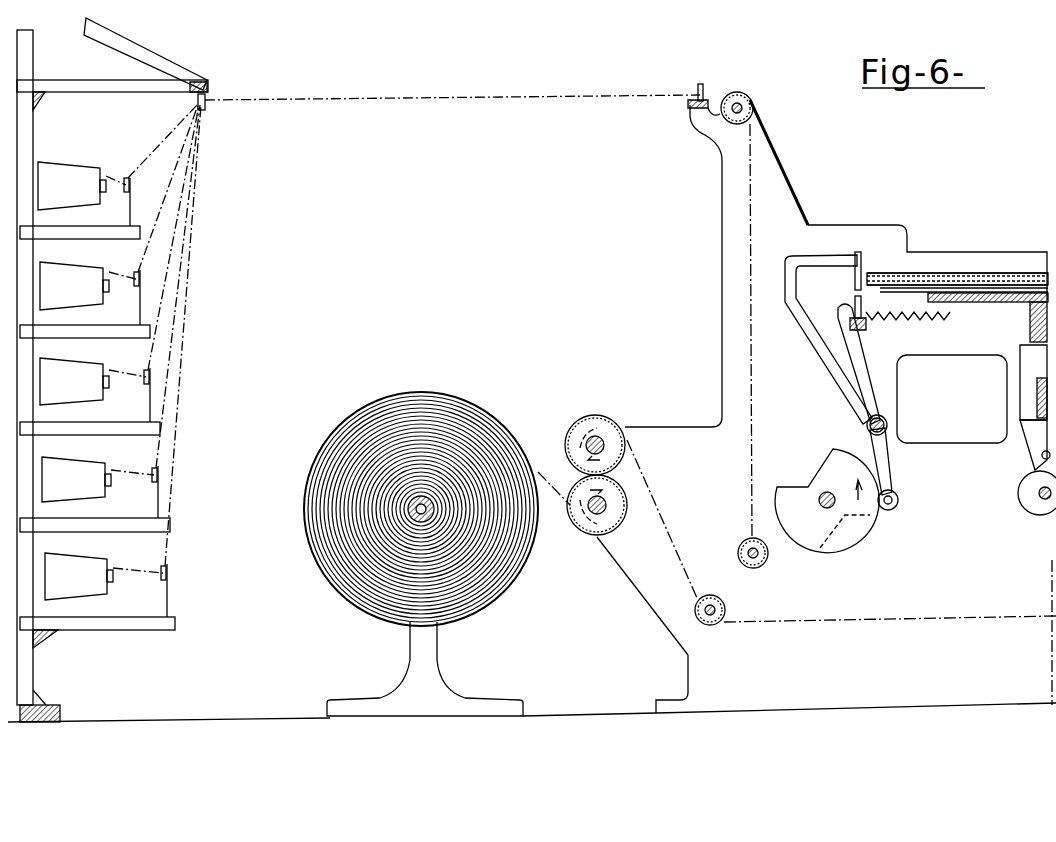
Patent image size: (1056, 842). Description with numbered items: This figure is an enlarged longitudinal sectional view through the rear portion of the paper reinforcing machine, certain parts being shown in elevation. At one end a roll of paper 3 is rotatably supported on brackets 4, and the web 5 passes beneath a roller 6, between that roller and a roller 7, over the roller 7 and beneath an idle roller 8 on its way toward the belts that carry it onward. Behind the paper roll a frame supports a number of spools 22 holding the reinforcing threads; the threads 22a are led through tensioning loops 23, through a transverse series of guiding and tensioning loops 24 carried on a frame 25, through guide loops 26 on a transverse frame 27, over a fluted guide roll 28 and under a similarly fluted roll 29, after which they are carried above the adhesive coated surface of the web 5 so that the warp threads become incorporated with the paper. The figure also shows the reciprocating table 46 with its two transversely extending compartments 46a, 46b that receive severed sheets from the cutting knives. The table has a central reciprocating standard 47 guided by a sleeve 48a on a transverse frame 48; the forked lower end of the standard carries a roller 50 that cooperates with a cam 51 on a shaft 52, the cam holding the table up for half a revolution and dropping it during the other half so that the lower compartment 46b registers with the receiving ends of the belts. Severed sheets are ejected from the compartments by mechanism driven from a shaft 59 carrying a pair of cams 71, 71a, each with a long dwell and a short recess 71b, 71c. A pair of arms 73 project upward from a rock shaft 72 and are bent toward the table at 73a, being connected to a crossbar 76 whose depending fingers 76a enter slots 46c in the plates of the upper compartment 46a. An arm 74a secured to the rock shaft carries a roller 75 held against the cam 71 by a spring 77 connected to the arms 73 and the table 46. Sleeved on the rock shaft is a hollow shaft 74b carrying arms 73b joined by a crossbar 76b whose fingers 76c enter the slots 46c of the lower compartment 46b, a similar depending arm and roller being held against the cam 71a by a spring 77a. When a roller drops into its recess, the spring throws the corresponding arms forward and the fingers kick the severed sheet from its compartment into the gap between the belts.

The roll of paper 3 is at (503, 594).
The brackets 4 is at (440, 648).
The web 5 is at (556, 480).
The roller 6 is at (590, 540).
The roller 7 is at (594, 414).
The idle roller 8 is at (712, 595).
The spools 22 is at (104, 170).
The threads 22a is at (122, 178).
The tensioning loops 23 is at (131, 188).
The guiding and tensioning loops 24 is at (205, 110).
The frame 25 is at (207, 90).
The guide loops 26 is at (697, 86).
The transverse frame 27 is at (686, 105).
The fluted guide roll 28 is at (750, 103).
The fluted roll 29 is at (755, 538).
The reciprocating table 46 is at (1000, 310).
The compartment 46a is at (958, 270).
The compartment 46b is at (1032, 273).
The slots 46c is at (905, 290).
The reciprocating standard 47 is at (1030, 328).
The transverse frame 48 is at (1037, 386).
The sleeve 48a is at (1020, 428).
The roller 50 is at (1040, 462).
The cam 51 is at (1018, 496).
The shaft 52 is at (1043, 497).
The shaft 59 is at (823, 506).
The cam 71 is at (811, 540).
The cam 71a is at (812, 452).
The recess 71b is at (790, 480).
The recess 71c is at (858, 520).
The rock shaft 72 is at (868, 428).
The arms 73 is at (804, 336).
The bent portion 73a is at (795, 257).
The arms 73b is at (858, 385).
The arm 74a is at (886, 463).
The hollow shaft 74b is at (888, 422).
The roller 75 is at (898, 503).
The crossbar 76 is at (859, 260).
The depending fingers 76a is at (862, 278).
The crossbar 76b is at (852, 305).
The fingers 76c is at (856, 296).
The spring 77 is at (860, 332).
The spring 77a is at (914, 325).